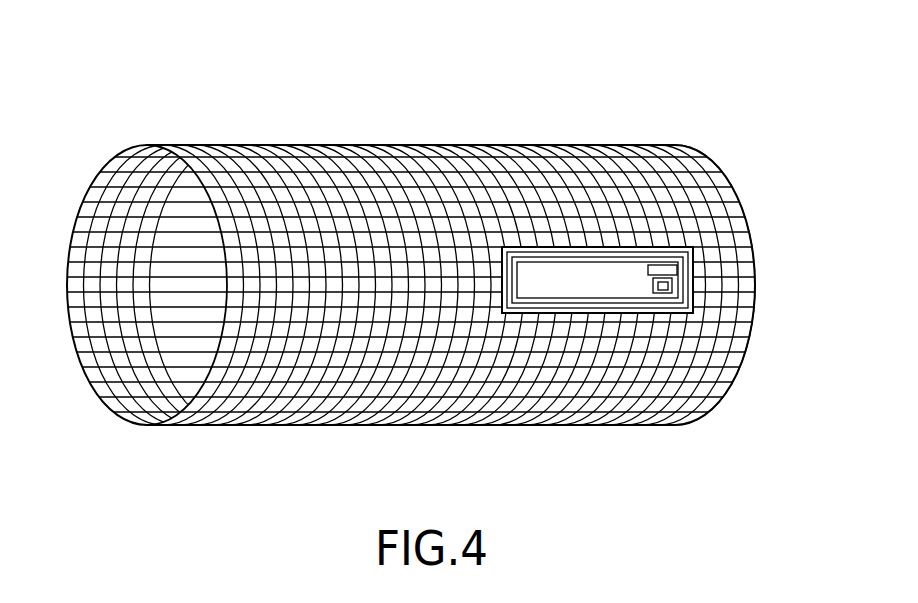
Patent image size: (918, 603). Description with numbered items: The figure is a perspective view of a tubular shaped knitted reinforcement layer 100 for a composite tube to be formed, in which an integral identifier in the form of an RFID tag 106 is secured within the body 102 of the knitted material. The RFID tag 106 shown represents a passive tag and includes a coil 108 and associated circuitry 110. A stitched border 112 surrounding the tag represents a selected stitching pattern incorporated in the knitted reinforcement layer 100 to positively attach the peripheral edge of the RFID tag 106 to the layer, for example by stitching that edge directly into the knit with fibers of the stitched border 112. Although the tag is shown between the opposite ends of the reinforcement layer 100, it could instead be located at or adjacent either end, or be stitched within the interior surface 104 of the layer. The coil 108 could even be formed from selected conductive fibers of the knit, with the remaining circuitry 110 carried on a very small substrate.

The tubular shaped knitted reinforcement layer 100 is at (350, 110).
The body 102 is at (590, 180).
The interior surface 104 is at (108, 201).
The RFID tag 106 is at (658, 228).
The coil 108 is at (624, 300).
The circuitry 110 is at (672, 285).
The stitched border 112 is at (678, 243).